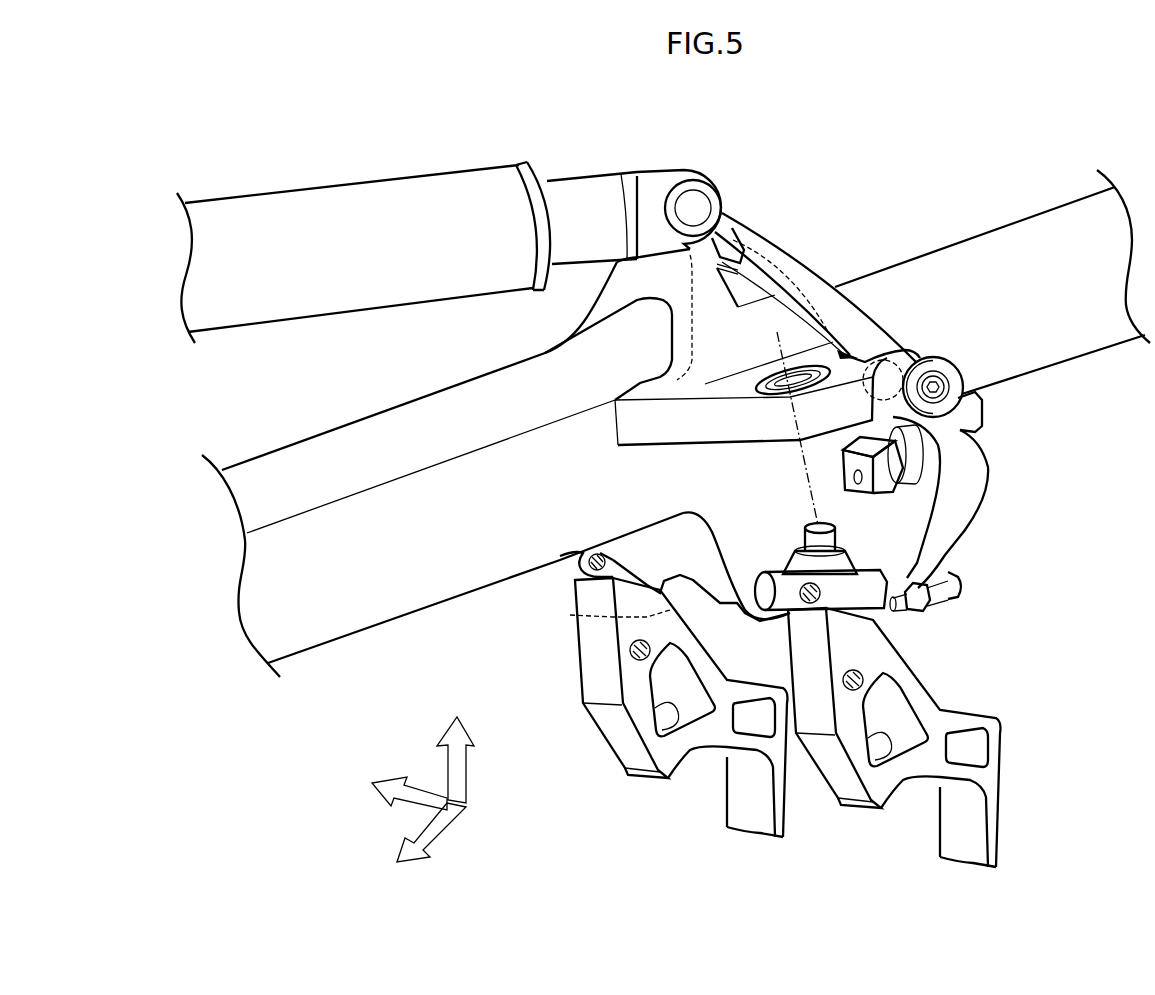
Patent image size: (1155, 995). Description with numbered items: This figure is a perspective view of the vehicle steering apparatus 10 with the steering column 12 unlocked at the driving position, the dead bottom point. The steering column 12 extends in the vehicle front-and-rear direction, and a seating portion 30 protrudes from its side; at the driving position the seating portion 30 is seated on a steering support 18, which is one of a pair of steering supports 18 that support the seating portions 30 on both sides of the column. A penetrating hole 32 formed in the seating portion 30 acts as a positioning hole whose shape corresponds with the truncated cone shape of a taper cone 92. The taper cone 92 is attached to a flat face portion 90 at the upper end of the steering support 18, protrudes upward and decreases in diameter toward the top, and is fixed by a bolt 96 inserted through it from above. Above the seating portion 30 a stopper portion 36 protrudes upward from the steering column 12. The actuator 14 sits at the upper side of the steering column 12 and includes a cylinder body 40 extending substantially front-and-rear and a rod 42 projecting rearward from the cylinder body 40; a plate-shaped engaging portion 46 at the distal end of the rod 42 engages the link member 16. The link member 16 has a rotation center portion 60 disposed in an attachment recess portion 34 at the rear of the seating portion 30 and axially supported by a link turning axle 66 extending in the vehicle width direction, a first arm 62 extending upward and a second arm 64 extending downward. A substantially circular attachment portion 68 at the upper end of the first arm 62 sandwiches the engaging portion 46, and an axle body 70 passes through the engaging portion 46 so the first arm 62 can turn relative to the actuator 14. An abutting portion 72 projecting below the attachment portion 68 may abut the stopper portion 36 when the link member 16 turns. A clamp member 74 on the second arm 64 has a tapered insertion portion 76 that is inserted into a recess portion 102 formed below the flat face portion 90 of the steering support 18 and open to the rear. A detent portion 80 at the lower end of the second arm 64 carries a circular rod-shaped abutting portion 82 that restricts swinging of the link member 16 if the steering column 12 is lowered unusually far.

The vehicle steering apparatus 10 is at (851, 143).
The steering column 12 is at (1027, 210).
The actuator 14 is at (395, 160).
The link member 16 is at (876, 292).
The steering support 18 is at (639, 788).
The seating portion 30 is at (700, 432).
The penetrating hole 32 is at (780, 374).
The attachment recess portion 34 is at (903, 349).
The stopper portion 36 is at (750, 240).
The cylinder body 40 is at (288, 193).
The rod 42 is at (578, 172).
The engaging portion 46 is at (640, 185).
The rotation center portion 60 is at (912, 340).
The first arm 62 is at (807, 262).
The second arm 64 is at (987, 470).
The link turning axle 66 is at (945, 382).
The attachment portion 68 is at (681, 168).
The axle body 70 is at (706, 206).
The abutting portion 72 is at (733, 243).
The clamp member 74 is at (984, 410).
The insertion portion 76 is at (841, 466).
The detent portion 80 is at (942, 592).
The abutting portion 82 is at (900, 608).
The flat face portion 90 is at (768, 572).
The taper cone 92 is at (847, 548).
The bolt 96 is at (818, 527).
The recess portion 102 is at (668, 606).